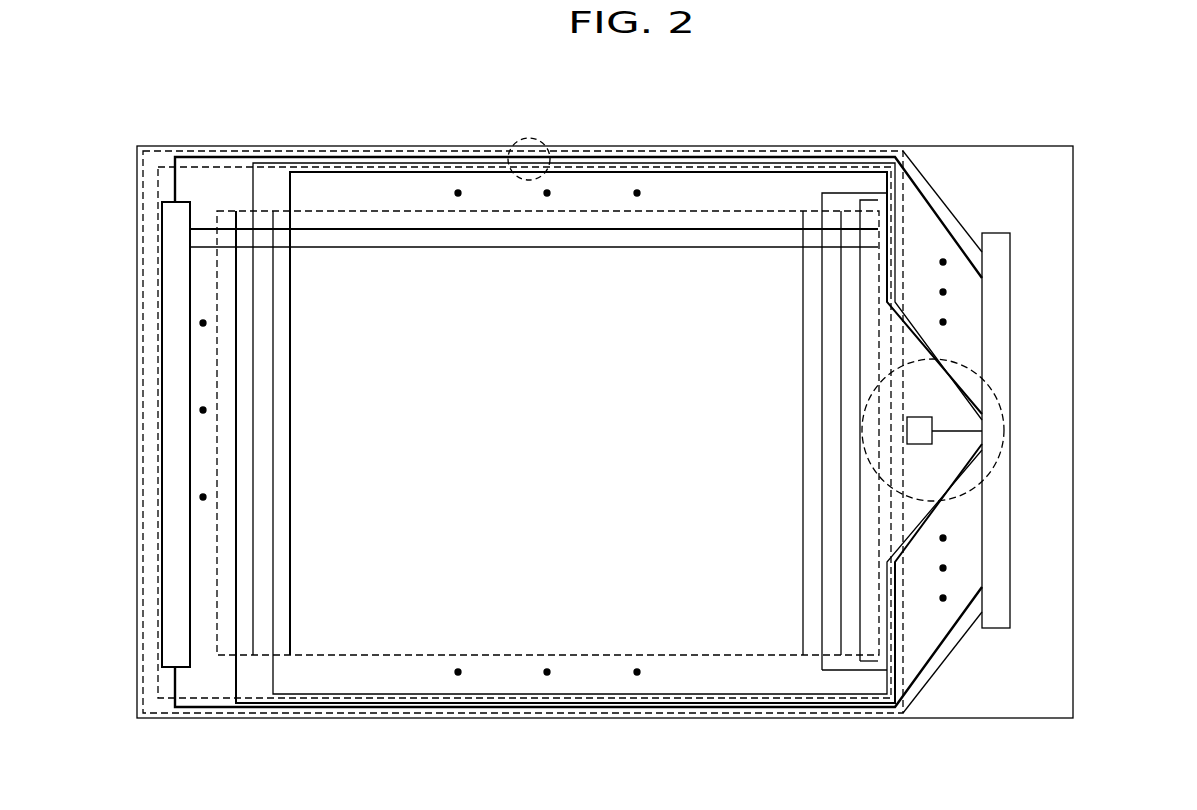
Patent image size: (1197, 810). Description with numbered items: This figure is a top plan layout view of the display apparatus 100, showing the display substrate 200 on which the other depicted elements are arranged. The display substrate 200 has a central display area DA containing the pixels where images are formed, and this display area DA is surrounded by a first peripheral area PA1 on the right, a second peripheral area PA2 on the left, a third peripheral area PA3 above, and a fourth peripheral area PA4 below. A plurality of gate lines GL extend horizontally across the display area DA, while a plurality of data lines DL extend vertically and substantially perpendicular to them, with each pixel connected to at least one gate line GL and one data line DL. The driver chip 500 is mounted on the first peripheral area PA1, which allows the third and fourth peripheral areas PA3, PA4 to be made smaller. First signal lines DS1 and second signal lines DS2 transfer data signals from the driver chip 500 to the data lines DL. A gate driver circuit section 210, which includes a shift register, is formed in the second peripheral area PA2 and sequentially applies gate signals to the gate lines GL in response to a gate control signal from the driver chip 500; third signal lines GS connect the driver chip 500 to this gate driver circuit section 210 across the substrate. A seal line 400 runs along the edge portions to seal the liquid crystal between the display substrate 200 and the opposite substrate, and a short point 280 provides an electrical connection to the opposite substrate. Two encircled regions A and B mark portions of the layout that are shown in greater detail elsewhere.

The display apparatus 100 is at (924, 110).
The display substrate 200 is at (1073, 292).
The gate driver circuit section 210 is at (170, 293).
The short point 280 is at (935, 421).
The seal line 400 is at (900, 720).
The driver chip 500 is at (1003, 515).
The third signal lines GS is at (232, 157).
The display area DA is at (355, 292).
The region A is at (527, 138).
The region B is at (1004, 430).
The first peripheral area PA1 is at (1044, 335).
The second peripheral area PA2 is at (147, 421).
The third peripheral area PA3 is at (700, 196).
The fourth peripheral area PA4 is at (410, 668).
The first signal lines DS1 is at (777, 163).
The second signal lines DS2 is at (838, 172).
The gate lines GL is at (612, 248).
The data lines DL is at (291, 430).